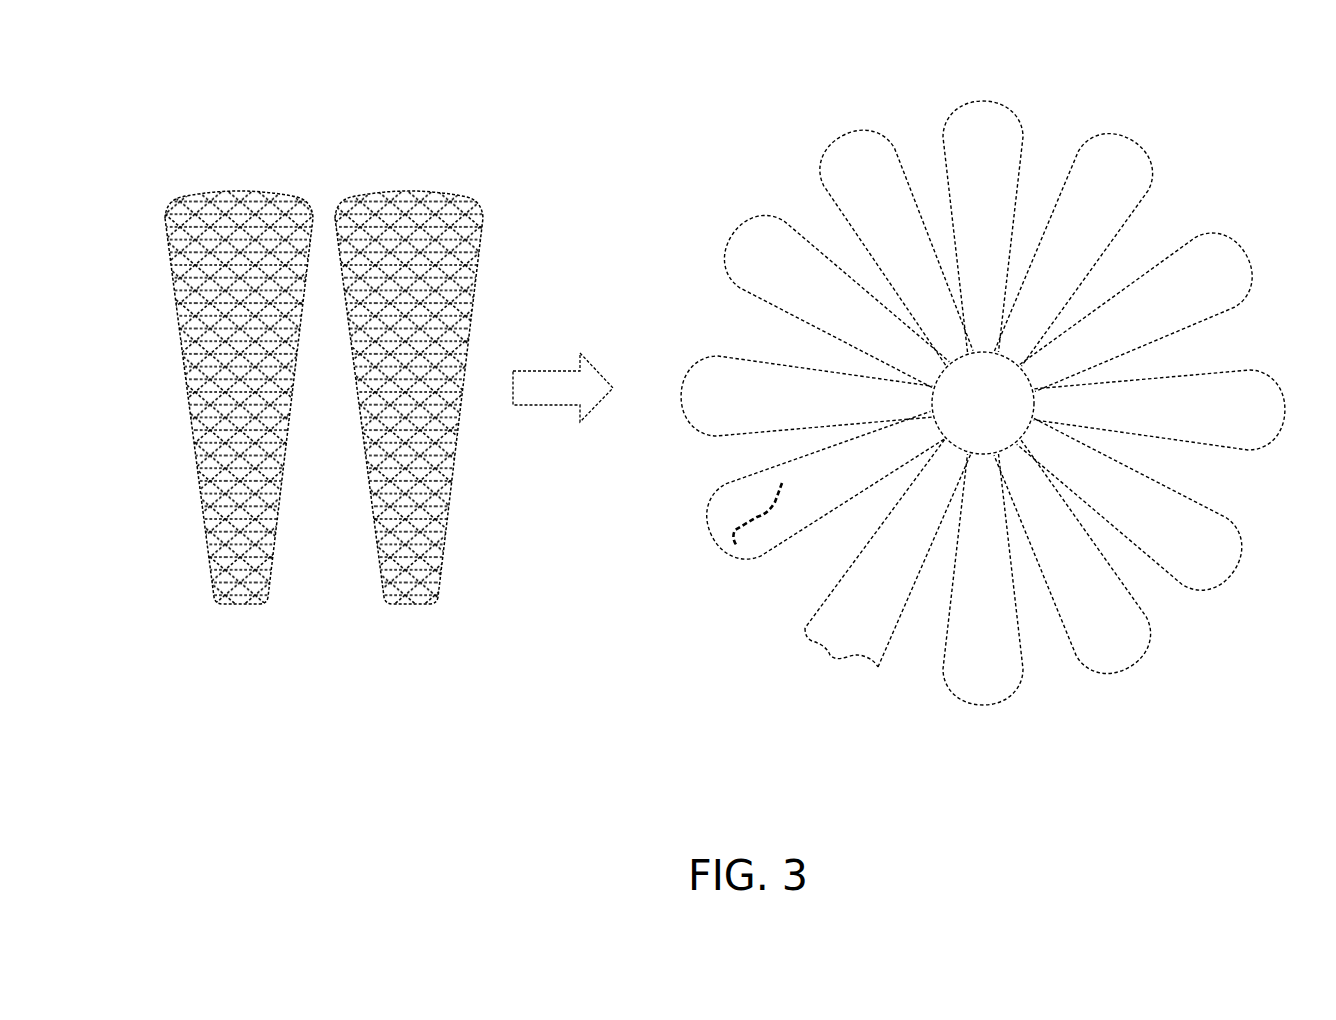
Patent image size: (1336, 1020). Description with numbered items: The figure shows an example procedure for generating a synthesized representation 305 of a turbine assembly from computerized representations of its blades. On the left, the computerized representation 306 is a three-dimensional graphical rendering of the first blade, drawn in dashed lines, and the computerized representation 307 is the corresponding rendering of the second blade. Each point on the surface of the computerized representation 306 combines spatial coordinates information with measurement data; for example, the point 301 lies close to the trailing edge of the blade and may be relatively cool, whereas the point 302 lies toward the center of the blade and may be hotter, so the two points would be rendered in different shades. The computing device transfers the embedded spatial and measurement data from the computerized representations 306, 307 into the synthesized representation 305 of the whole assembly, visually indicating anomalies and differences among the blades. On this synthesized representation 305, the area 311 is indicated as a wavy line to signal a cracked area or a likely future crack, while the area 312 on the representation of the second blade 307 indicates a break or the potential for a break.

The point 301 is at (215, 397).
The point 302 is at (225, 392).
The synthesized representation 305 is at (1079, 66).
The computerized representation 306 is at (536, 366).
The computerized representation 307 is at (653, 418).
The area 311 is at (772, 508).
The area 312 is at (840, 673).